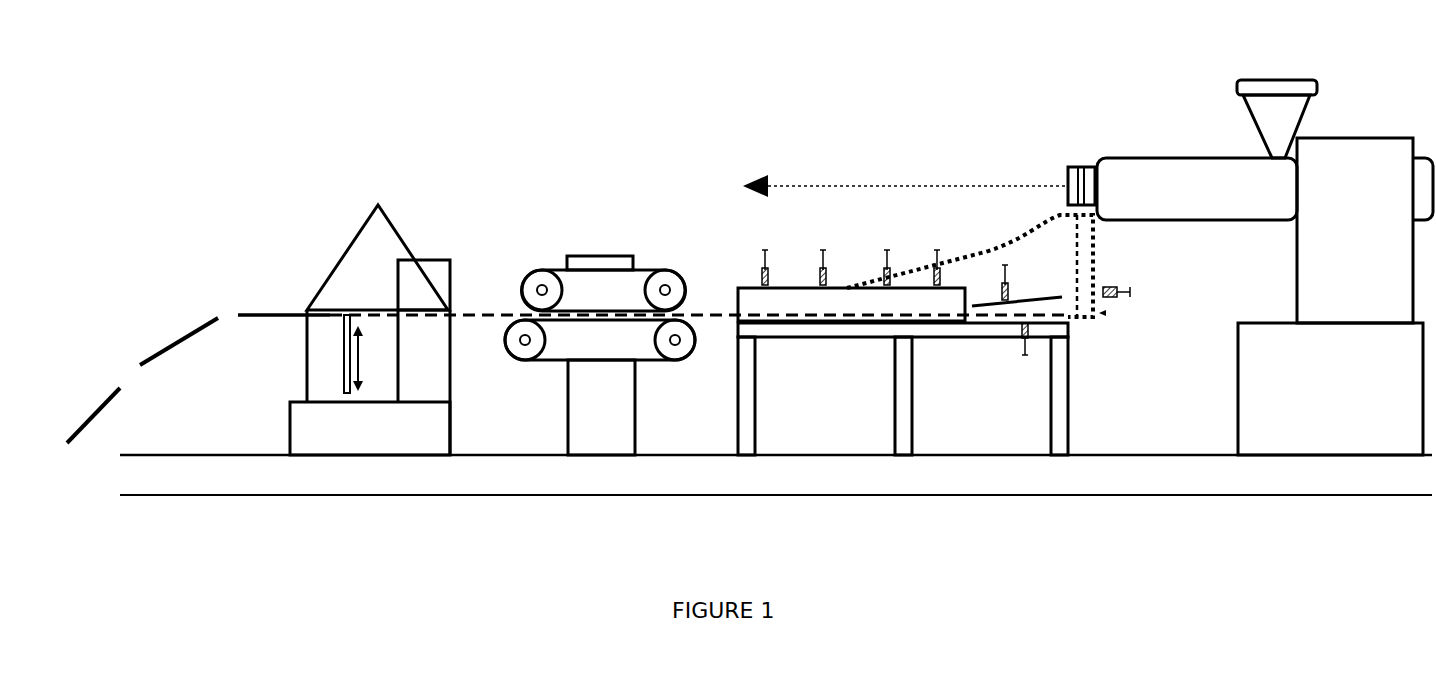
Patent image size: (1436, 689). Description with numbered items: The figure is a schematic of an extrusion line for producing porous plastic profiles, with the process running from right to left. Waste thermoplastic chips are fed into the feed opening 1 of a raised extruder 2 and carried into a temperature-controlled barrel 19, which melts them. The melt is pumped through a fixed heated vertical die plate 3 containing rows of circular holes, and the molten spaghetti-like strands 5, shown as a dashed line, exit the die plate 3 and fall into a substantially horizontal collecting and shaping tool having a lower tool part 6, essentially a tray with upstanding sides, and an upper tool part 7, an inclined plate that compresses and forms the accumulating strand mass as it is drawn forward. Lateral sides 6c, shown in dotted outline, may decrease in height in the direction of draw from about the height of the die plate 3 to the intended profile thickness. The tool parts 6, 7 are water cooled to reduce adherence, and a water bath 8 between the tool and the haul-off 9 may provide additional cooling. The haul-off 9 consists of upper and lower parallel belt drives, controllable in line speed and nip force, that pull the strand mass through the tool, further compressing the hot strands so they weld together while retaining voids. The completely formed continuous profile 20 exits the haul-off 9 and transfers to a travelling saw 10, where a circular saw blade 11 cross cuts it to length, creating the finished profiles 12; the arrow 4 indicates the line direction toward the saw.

The feed opening 1 is at (1277, 76).
The raised extruder 2 is at (1345, 126).
The heated die plate 3 is at (1074, 158).
The conveying direction arrow 4 is at (879, 178).
The strands 5 is at (1094, 243).
The lower tool part 6 is at (1035, 400).
The lateral sides 6c is at (1053, 210).
The upper tool part 7 is at (1042, 289).
The water bath 8 is at (760, 240).
The haul-off 9 is at (589, 248).
The travelling saw 10 is at (411, 230).
The circular saw blade 11 is at (338, 342).
The finished profiles 12 is at (255, 302).
The temperature-controlled barrel 19 is at (1175, 148).
The continuous profile 20 is at (492, 303).